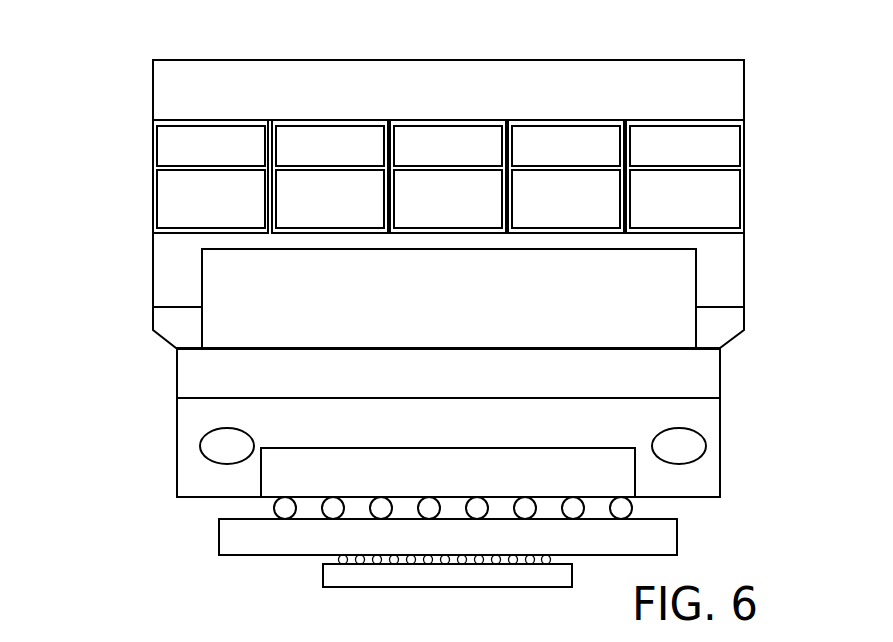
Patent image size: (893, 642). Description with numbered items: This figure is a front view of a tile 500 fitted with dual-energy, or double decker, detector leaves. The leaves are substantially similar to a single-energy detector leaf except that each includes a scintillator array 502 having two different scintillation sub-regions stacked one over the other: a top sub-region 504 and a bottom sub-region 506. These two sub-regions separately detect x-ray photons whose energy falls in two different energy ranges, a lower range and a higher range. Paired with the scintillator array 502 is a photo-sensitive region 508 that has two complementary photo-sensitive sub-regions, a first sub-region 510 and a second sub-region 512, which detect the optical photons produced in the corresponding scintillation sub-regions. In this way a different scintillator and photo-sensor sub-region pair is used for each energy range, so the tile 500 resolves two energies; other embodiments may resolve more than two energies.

The tile 500 is at (125, 72).
The scintillator array 502 is at (127, 108).
The top sub-region 504 is at (166, 147).
The bottom sub-region 506 is at (166, 213).
The photo-sensitive region 508 is at (770, 110).
The first sub-region 510 is at (743, 150).
The second sub-region 512 is at (743, 217).